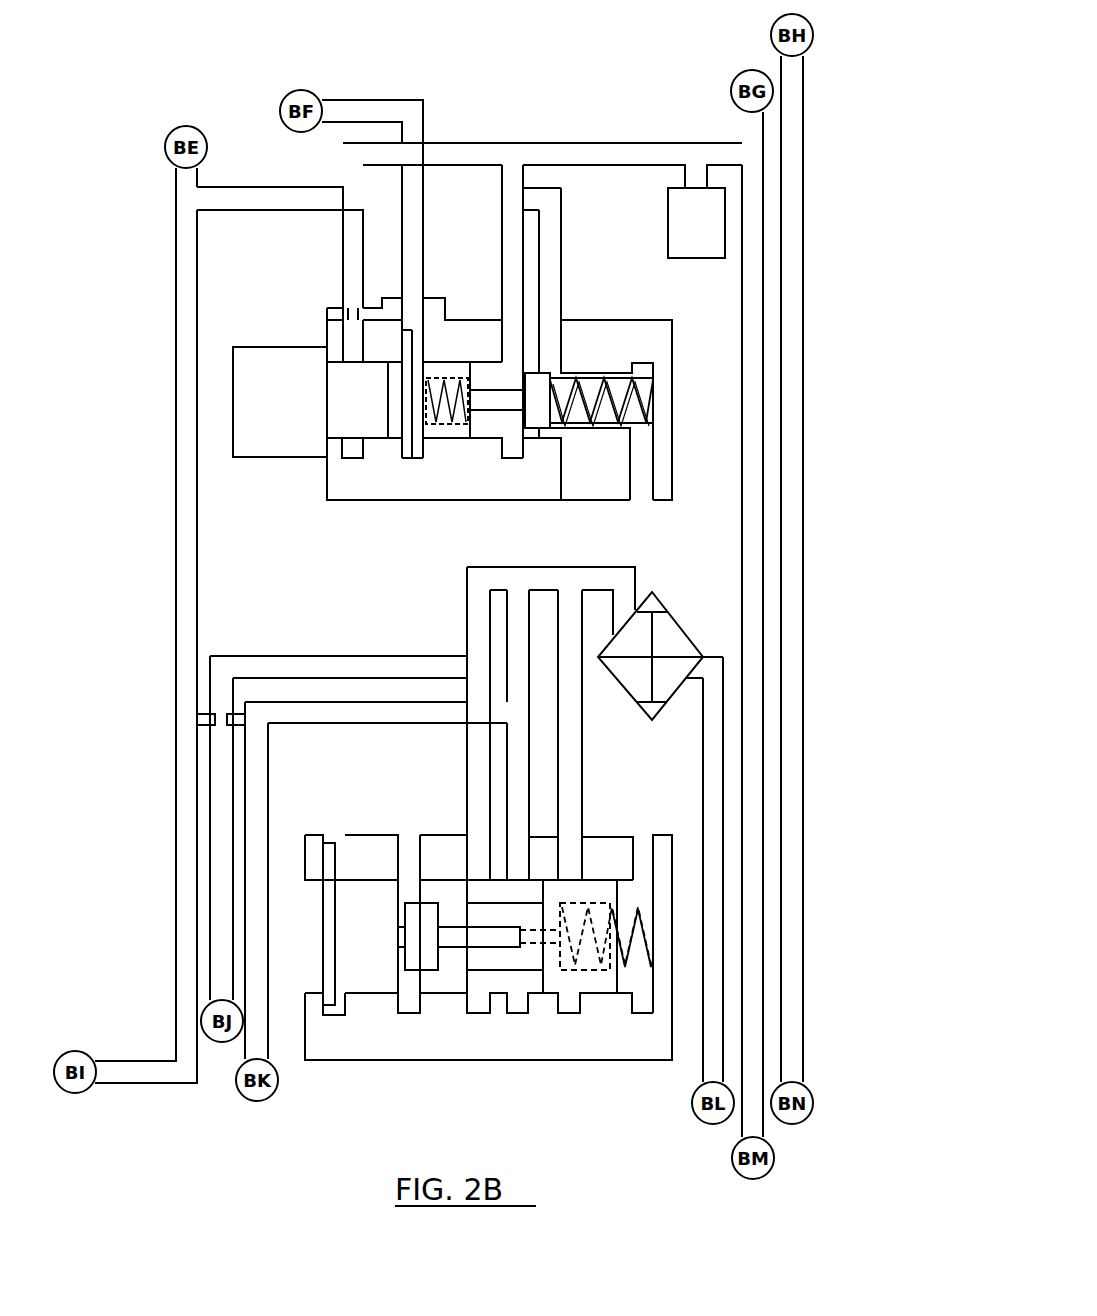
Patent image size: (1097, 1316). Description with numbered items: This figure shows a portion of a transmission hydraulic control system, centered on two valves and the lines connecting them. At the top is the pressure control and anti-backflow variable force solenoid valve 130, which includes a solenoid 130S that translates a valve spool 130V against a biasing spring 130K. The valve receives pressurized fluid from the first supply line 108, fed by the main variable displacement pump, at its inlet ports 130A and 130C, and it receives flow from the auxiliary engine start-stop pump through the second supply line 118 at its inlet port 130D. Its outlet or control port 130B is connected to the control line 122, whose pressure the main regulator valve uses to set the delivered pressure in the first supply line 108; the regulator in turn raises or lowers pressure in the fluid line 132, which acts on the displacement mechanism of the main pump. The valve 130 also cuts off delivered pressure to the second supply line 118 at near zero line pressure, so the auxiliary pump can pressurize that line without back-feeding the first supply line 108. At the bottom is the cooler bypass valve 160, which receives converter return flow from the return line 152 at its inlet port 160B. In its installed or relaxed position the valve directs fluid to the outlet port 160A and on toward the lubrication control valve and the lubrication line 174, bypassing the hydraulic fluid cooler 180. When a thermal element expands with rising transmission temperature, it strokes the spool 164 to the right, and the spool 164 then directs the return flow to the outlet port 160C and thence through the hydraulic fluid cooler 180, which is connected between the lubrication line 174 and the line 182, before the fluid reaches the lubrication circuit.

The first supply line 108 is at (462, 155).
The second supply line 118 is at (176, 486).
The control line 122 is at (366, 113).
The pressure control and anti-backflow variable force solenoid valve 130 is at (483, 367).
The inlet port 130A is at (355, 308).
The outlet port 130B is at (410, 318).
The inlet port 130C is at (513, 320).
The inlet port 130D is at (550, 320).
The biasing spring 130K is at (645, 390).
The solenoid 130S is at (302, 416).
The valve spool 130V is at (500, 400).
The fluid line 132 is at (795, 543).
The return line 152 is at (263, 790).
The cooler bypass valve 160 is at (488, 839).
The outlet port 160A is at (478, 857).
The inlet port 160B is at (515, 853).
The outlet port 160C is at (568, 852).
The spool 164 is at (590, 888).
The lubrication line 174 is at (263, 665).
The hydraulic fluid cooler 180 is at (667, 640).
The line 182 is at (713, 1063).